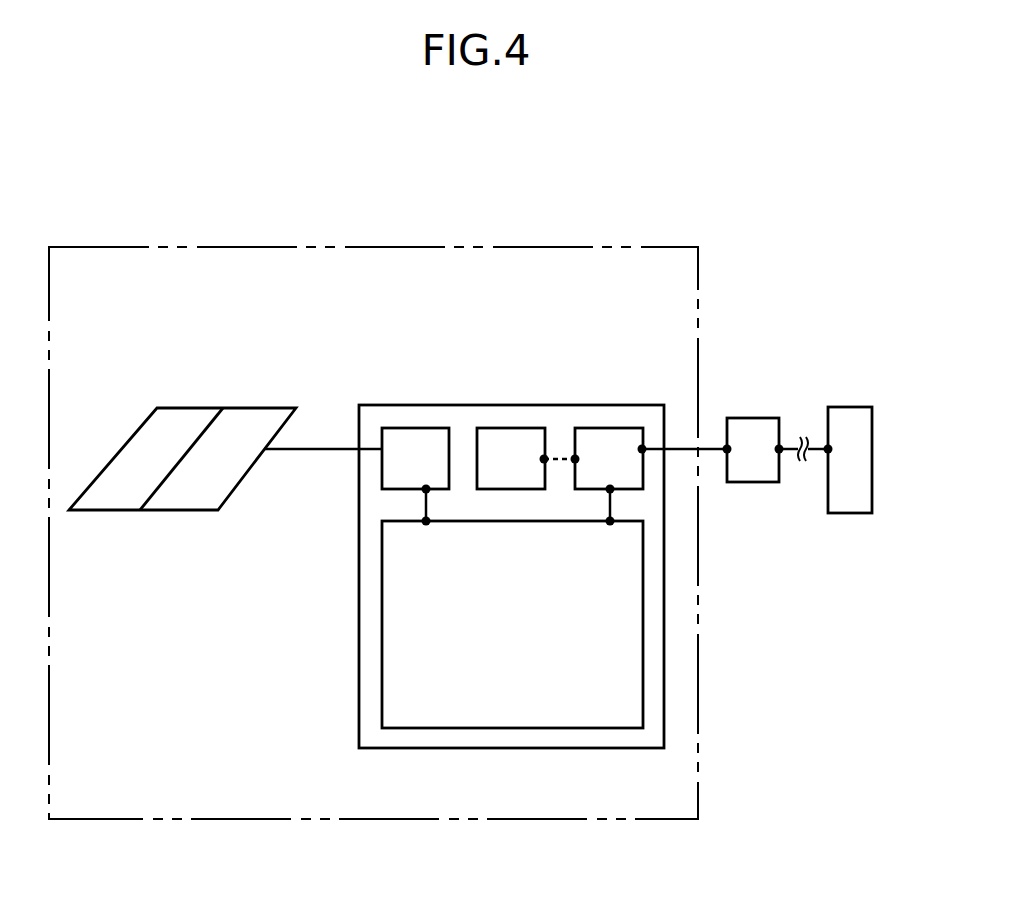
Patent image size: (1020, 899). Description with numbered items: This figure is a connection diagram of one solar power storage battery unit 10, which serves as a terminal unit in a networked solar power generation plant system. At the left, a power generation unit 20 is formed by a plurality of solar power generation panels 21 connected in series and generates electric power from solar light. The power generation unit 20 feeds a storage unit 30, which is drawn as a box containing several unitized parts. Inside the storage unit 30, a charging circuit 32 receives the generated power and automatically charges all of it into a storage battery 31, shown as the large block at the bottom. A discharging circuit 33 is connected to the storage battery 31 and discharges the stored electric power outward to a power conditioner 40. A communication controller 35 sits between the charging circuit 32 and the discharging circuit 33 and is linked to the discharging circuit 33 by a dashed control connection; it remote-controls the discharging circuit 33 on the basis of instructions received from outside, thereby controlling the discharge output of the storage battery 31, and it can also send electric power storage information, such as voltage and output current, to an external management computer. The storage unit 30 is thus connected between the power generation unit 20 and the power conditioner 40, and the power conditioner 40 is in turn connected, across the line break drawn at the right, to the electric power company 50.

The solar power storage battery unit 10 is at (453, 247).
The power generation unit 20 is at (210, 407).
The solar power generation panel 21 is at (138, 445).
The storage unit 30 is at (514, 405).
The storage battery 31 is at (519, 691).
The charging circuit 32 is at (417, 447).
The discharging circuit 33 is at (613, 442).
The communication controller 35 is at (530, 443).
The power conditioner 40 is at (755, 425).
The electric power company 50 is at (851, 418).